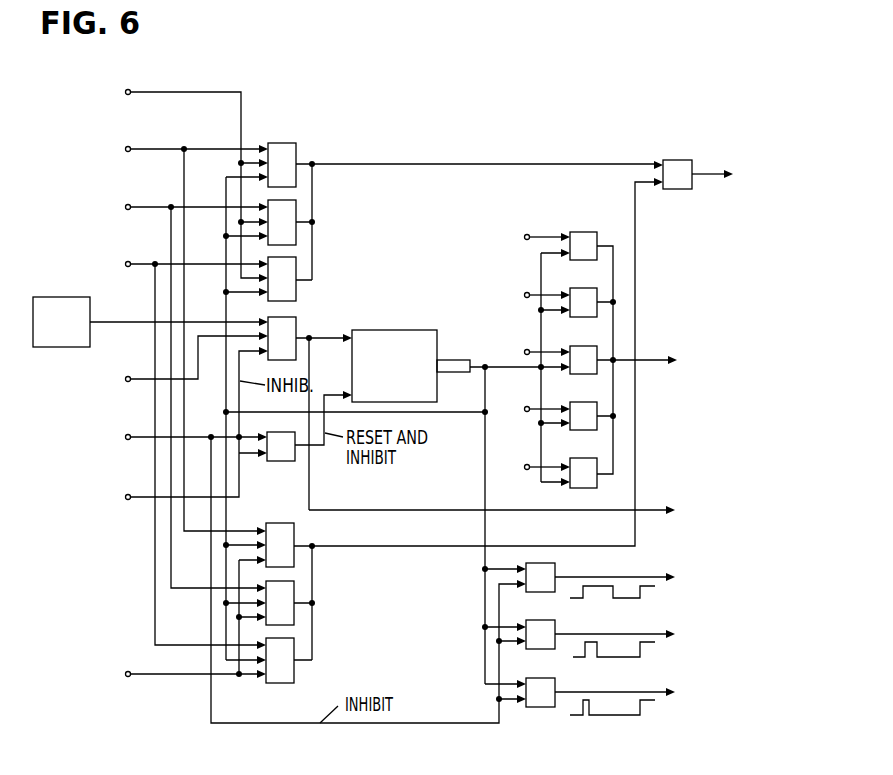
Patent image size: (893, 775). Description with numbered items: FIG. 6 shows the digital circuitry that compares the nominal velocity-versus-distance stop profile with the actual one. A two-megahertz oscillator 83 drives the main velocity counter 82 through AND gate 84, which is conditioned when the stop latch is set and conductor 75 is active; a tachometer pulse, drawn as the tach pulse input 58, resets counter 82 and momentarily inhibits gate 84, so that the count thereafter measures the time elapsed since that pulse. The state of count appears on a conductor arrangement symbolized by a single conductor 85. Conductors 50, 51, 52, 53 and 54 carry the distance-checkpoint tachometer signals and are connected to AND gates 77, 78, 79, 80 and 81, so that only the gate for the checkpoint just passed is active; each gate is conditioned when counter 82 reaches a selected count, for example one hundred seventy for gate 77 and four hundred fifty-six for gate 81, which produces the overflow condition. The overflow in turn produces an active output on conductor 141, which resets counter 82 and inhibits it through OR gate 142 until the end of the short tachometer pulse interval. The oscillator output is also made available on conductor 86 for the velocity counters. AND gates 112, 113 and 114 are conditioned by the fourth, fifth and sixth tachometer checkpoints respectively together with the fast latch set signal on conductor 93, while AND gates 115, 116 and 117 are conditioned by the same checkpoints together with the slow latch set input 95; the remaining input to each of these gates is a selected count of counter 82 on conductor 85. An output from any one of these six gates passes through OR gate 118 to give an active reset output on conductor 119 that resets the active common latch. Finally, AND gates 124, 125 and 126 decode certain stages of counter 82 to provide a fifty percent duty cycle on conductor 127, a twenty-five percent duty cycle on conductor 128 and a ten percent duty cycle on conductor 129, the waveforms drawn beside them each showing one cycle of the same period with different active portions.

The conductor 93 is at (183, 91).
The conductor 50 is at (135, 147).
The conductor 51 is at (135, 205).
The conductor 52 is at (135, 262).
The conductor 53 is at (526, 407).
The conductor 54 is at (526, 465).
The two-megahertz oscillator 83 is at (91, 303).
The conductor 75 is at (145, 376).
The tach pulse input 58 is at (143, 440).
The conductor 141 is at (142, 499).
The slow latch set input 95 is at (149, 631).
The AND gate 112 is at (294, 142).
The AND gate 113 is at (297, 208).
The AND gate 114 is at (297, 266).
The AND gate 84 is at (296, 317).
The OR gate 142 is at (285, 462).
The AND gate 115 is at (295, 535).
The AND gate 116 is at (295, 592).
The AND gate 117 is at (295, 648).
The main velocity counter 82 is at (390, 328).
The conductor 85 is at (475, 356).
The AND gate 77 is at (582, 232).
The AND gate 78 is at (582, 288).
The AND gate 79 is at (582, 346).
The AND gate 80 is at (582, 402).
The AND gate 81 is at (582, 458).
The OR gate 118 is at (672, 157).
The conductor 119 is at (707, 173).
The conductor 86 is at (648, 511).
The AND gate 124 is at (535, 562).
The AND gate 125 is at (540, 620).
The AND gate 126 is at (540, 678).
The conductor 127 is at (588, 578).
The conductor 128 is at (590, 634).
The conductor 129 is at (590, 692).